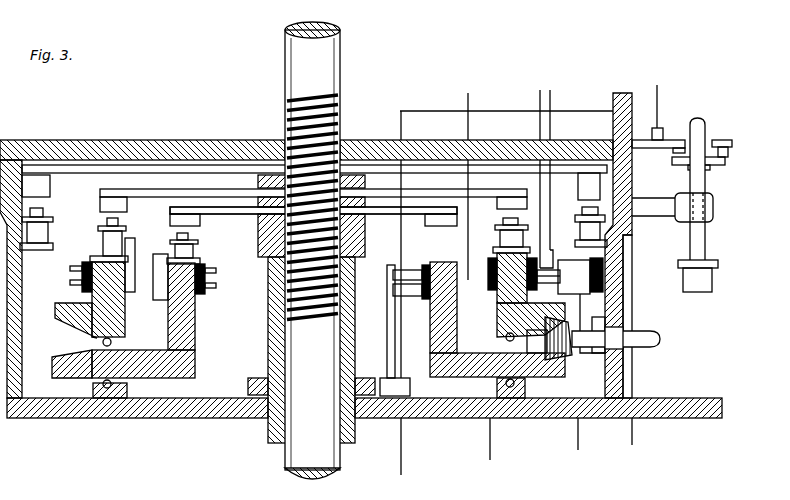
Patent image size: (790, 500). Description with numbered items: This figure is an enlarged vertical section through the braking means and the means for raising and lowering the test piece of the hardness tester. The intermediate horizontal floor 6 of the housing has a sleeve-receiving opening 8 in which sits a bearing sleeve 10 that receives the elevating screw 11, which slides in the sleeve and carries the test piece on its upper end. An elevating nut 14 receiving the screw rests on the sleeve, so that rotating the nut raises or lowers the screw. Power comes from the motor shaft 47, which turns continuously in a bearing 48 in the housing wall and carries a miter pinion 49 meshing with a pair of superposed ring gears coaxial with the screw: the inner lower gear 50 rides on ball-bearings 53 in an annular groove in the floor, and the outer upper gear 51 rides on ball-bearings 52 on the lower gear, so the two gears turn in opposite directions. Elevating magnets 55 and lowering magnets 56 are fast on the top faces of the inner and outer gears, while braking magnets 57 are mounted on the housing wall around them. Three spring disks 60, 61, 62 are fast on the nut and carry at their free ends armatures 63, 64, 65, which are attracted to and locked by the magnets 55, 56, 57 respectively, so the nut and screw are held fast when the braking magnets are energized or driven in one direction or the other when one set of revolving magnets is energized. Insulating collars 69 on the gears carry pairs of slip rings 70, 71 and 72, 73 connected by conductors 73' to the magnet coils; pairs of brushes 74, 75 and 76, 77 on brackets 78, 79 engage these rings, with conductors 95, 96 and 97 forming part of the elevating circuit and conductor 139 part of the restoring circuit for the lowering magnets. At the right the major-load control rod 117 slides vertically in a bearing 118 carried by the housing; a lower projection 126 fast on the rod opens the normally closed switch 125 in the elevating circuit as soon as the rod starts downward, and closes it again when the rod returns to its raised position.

The intermediate horizontal partition or floor 6 is at (205, 418).
The sleeve-receiving opening 8 is at (363, 404).
The bearing sleeve 10 is at (268, 356).
The elevating screw 11 is at (312, 250).
The elevating nut 14 is at (364, 240).
The motor shaft 47 is at (648, 345).
The bearing 48 is at (630, 334).
The miter pinion 49 is at (581, 358).
The inner lower ring gear 50 is at (60, 366).
The outer upper ring gear 51 is at (60, 316).
The ball-bearings 52 is at (100, 342).
The ball-bearings 53 is at (109, 390).
The elevating magnets 55 is at (172, 247).
The lowering or down-drive magnets 56 is at (100, 250).
The braking magnets 57 is at (48, 240).
The spring disk or set of radial flat springs 60 is at (240, 215).
The spring disk or set of radial flat springs 61 is at (163, 197).
The spring disk or set of radial flat springs 62 is at (84, 175).
The armatures 63 is at (208, 224).
The armatures 64 is at (104, 206).
The armatures 65 is at (36, 186).
The insulating collars 69 is at (82, 285).
The slip ring 70 is at (216, 286).
The slip ring 71 is at (222, 262).
The slip ring 72 is at (70, 269).
The slip ring 73 is at (62, 277).
The conductors 73' is at (144, 281).
The brush 74 is at (400, 272).
The brush 75 is at (404, 298).
The brush 76 is at (546, 267).
The brush 77 is at (500, 312).
The bracket 78 is at (387, 330).
The bracket 79 is at (580, 276).
The conductor 95 is at (402, 445).
The conductor 96 is at (590, 111).
The conductor 97 is at (668, 105).
The major-load control rod 117 is at (690, 240).
The bearing 118 is at (645, 208).
The normally closed switch 125 is at (661, 130).
The lower projection 126 is at (718, 166).
The conductor 139 is at (540, 127).